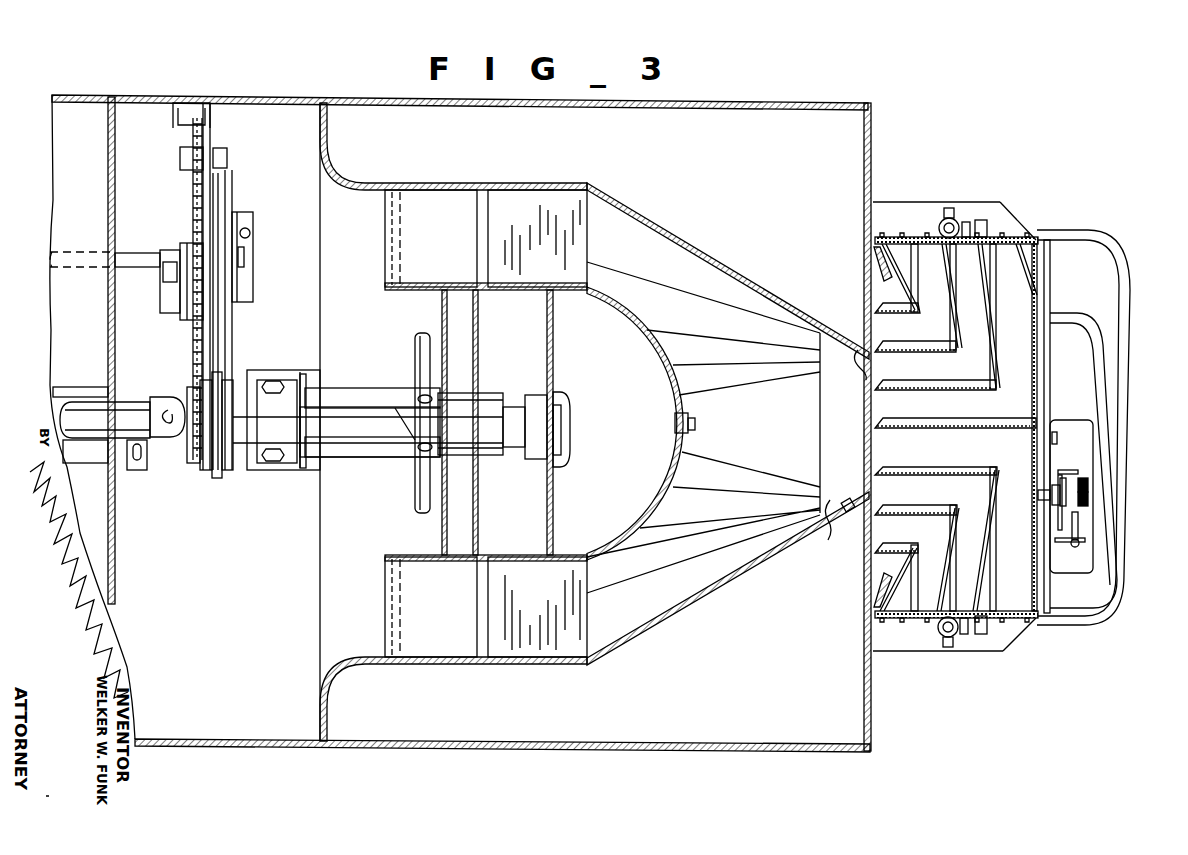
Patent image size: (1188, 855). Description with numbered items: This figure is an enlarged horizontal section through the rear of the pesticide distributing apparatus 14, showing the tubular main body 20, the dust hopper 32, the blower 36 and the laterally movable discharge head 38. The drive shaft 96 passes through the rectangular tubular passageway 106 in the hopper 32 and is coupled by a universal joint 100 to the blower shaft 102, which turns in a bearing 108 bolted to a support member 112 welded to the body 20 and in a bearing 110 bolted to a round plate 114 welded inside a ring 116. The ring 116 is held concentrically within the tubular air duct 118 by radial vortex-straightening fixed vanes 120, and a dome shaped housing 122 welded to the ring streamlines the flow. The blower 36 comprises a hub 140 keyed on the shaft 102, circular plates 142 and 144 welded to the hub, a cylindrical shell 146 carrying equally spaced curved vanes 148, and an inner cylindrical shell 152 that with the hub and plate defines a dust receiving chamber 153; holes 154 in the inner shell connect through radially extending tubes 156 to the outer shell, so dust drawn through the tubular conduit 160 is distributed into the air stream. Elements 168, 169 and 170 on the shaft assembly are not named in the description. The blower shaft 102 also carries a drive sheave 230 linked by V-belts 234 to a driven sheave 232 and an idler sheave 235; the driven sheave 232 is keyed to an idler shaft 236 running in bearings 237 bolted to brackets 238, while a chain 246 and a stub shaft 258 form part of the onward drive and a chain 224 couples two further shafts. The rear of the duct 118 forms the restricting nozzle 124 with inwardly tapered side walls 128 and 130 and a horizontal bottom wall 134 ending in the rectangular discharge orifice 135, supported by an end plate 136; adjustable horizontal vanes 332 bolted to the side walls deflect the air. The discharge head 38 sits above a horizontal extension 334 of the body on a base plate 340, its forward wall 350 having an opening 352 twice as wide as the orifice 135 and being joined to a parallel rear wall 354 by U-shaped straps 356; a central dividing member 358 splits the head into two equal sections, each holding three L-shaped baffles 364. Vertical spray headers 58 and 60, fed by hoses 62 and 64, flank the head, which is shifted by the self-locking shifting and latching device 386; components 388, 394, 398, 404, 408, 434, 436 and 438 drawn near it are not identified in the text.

The pesticide distributing apparatus 14 is at (962, 122).
The main body 20 is at (63, 90).
The dust hopper 32 is at (95, 303).
The blower 36 is at (385, 244).
The discharge head 38 is at (1040, 620).
The vertical header 58 is at (940, 637).
The vertical header 60 is at (940, 222).
The hose 62 is at (1085, 625).
The hose 64 is at (1105, 240).
The drive shaft 96 is at (98, 400).
The universal joint 100 is at (163, 405).
The blower shaft 102 is at (305, 460).
The tubular passageway 106 is at (60, 405).
The bearing 108 is at (255, 462).
The bearing 110 is at (527, 453).
The support member 112 is at (265, 372).
The plate 114 is at (547, 498).
The ring 116 is at (514, 286).
The air duct 118 is at (457, 185).
The fixed vanes 120 is at (542, 218).
The dome shaped housing 122 is at (688, 398).
The nozzle 124 is at (680, 234).
The side wall 128 is at (698, 252).
The side wall 130 is at (748, 572).
The bottom wall 134 is at (752, 443).
The discharge orifice 135 is at (872, 372).
The end plate 136 is at (862, 222).
The hub 140 is at (492, 392).
The circular plate 142 is at (442, 305).
The circular plate 144 is at (478, 316).
The cylindrical shell 146 is at (462, 284).
The curved vanes 148 is at (452, 223).
The inner cylindrical shell 152 is at (413, 392).
The dust receiving chamber 153 is at (418, 435).
The holes 154 is at (418, 398).
The radially extending tube 156 is at (414, 345).
The tubular conduit 160 is at (233, 460).
The sleeve 168 is at (360, 458).
The bolt 169 is at (312, 470).
The bolt 170 is at (305, 468).
The chain 224 is at (172, 493).
The drive sheave 230 is at (238, 365).
The driven sheave 232 is at (238, 208).
The V-belts 234 is at (193, 325).
The idler sheave 235 is at (237, 285).
The idler shaft 236 is at (80, 246).
The bearing 237 is at (168, 248).
The bracket 238 is at (165, 280).
The chain 246 is at (193, 345).
The stub shaft 258 is at (178, 292).
The vanes 332 is at (828, 520).
The horizontal extension 334 is at (1051, 288).
The base plate 340 is at (940, 456).
The forward wall 350 is at (864, 262).
The opening 352 is at (866, 290).
The rear wall 354 is at (1033, 398).
The U-shaped straps 356 is at (1010, 240).
The dividing member 358 is at (950, 430).
The L-shaped baffles 364 is at (905, 345).
The shifting and latching device 386 is at (1046, 483).
The actuator rod 388 is at (1060, 525).
The bracket 394 is at (1055, 540).
The switch 398 is at (1070, 437).
The contact 404 is at (1088, 497).
The arm 408 is at (1060, 492).
The contact 434 is at (1088, 482).
The spring 436 is at (1073, 460).
The pin 438 is at (1078, 540).